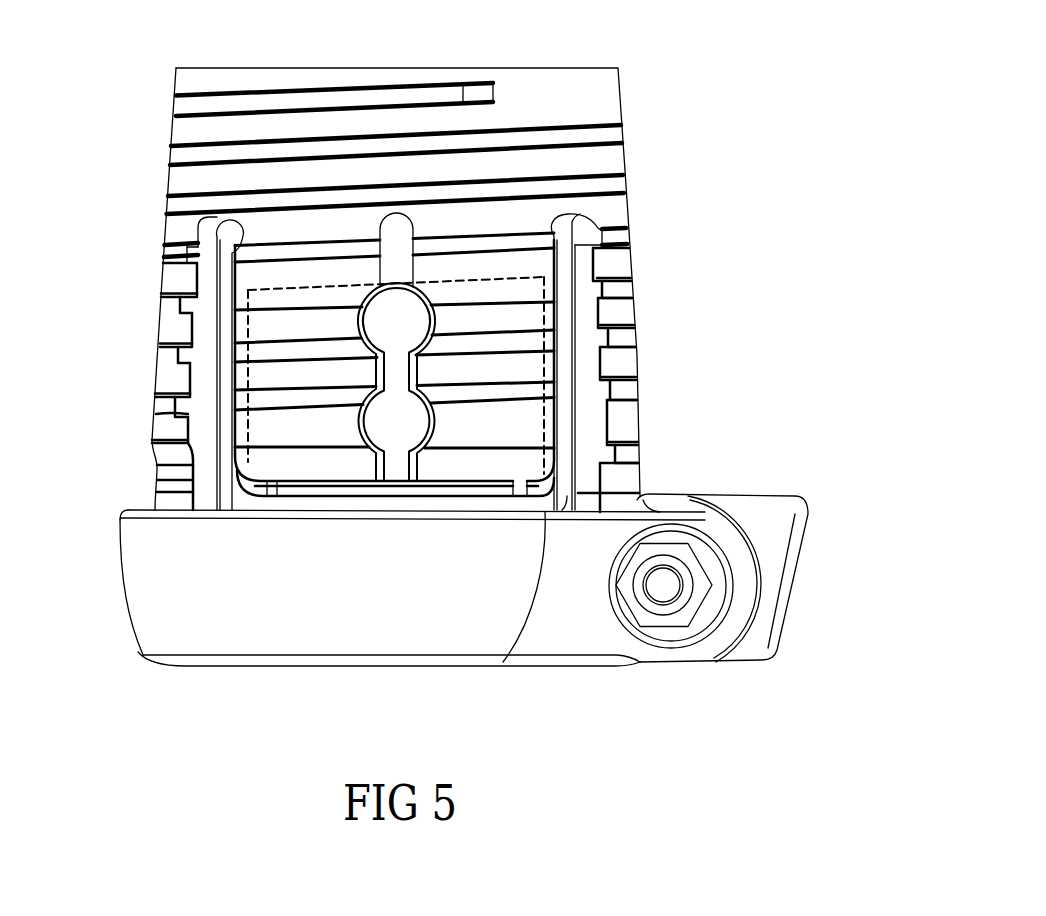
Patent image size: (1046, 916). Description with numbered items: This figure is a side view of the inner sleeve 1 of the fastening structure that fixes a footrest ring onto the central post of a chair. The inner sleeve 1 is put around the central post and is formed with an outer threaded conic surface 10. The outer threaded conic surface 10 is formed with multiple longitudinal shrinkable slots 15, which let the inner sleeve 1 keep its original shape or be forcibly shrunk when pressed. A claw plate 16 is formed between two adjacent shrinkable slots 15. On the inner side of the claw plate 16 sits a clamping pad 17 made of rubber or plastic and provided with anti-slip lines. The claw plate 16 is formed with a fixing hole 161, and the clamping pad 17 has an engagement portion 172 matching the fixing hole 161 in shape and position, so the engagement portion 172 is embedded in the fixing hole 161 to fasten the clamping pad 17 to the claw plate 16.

The inner sleeve 1 is at (632, 90).
The outer threaded conic surface 10 is at (170, 157).
The shrinkable slots 15 is at (225, 298).
The claw plate 16 is at (273, 425).
The fixing hole 161 is at (360, 435).
The clamping pad 17 is at (543, 315).
The engagement portion 172 is at (402, 438).